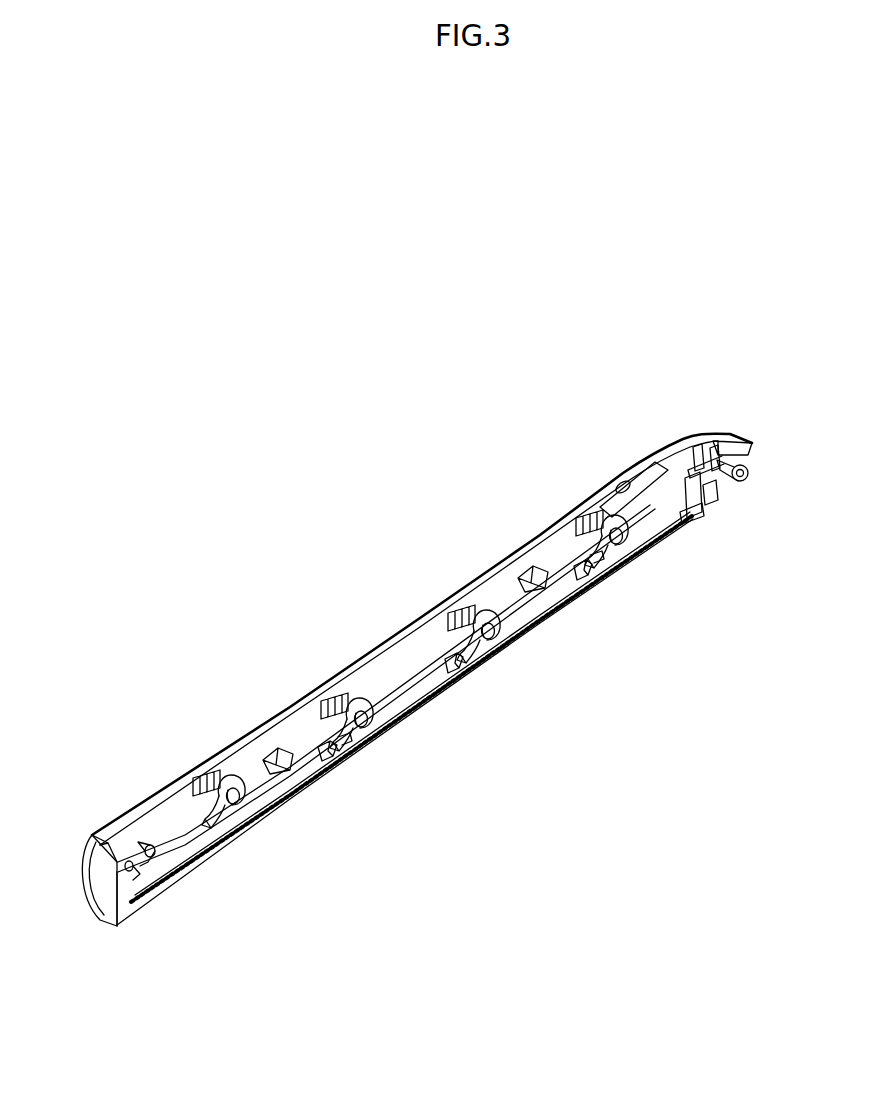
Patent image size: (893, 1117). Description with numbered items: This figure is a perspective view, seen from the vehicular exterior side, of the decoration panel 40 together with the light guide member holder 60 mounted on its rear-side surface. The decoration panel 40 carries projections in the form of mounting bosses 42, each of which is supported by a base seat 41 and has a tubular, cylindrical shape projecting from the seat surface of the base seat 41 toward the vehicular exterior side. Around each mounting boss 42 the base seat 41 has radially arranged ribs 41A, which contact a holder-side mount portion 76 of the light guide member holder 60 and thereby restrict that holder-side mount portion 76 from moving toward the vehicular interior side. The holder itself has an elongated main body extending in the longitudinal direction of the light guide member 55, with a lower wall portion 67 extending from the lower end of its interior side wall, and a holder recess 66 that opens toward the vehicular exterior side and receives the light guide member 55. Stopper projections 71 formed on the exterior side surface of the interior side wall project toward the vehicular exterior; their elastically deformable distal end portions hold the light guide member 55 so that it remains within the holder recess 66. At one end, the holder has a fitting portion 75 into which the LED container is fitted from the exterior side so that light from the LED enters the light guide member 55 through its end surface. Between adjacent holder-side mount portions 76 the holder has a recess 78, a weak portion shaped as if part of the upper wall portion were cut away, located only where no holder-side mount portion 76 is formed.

The decoration panel 40 is at (416, 657).
The base seat 41 is at (205, 790).
The ribs 41A is at (218, 773).
The mounting boss 42 is at (231, 804).
The light guide member 55 is at (417, 694).
The light guide member holder 60 is at (155, 880).
The holder recess 66 is at (503, 648).
The lower wall portion 67 is at (180, 860).
The stopper projections 71 is at (325, 753).
The fitting portion 75 is at (710, 485).
The holder-side mount portion 76 is at (232, 777).
The recess 78 is at (342, 743).